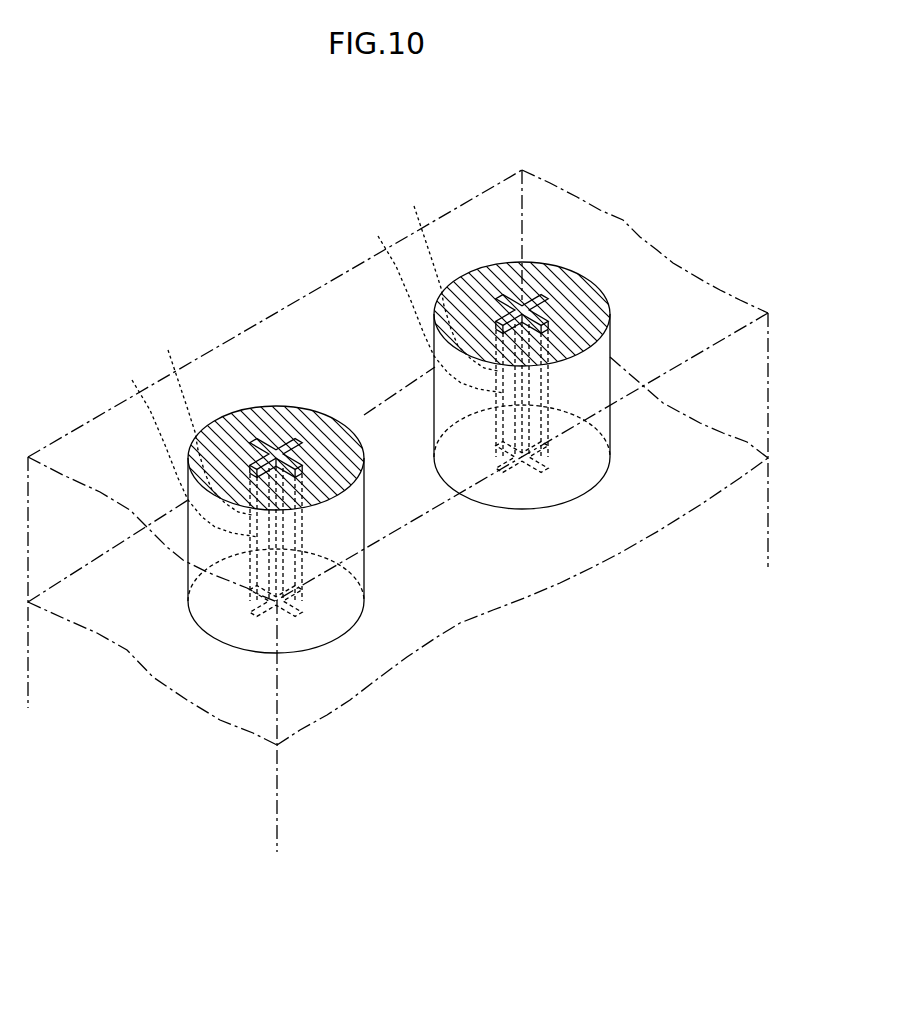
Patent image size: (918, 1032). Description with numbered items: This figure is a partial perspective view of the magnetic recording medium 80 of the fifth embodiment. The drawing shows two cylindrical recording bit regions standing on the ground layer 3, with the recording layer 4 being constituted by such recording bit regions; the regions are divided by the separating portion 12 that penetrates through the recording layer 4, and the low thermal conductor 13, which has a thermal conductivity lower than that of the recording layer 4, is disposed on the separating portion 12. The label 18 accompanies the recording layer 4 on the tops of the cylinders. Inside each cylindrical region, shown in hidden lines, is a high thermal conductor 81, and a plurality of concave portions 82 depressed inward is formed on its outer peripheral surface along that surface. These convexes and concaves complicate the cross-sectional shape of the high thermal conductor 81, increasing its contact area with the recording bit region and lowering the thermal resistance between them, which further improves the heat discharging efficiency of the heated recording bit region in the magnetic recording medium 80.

The magnetic recording medium 80 is at (444, 487).
The low thermal conductor 13 is at (444, 511).
The separating portion 12 is at (757, 397).
The ground layer 3 is at (757, 518).
The cylindrical member 18 is at (399, 387).
The recording layer 4 is at (399, 387).
The high thermal conductor 81 is at (373, 382).
The concave portions 82 is at (310, 357).